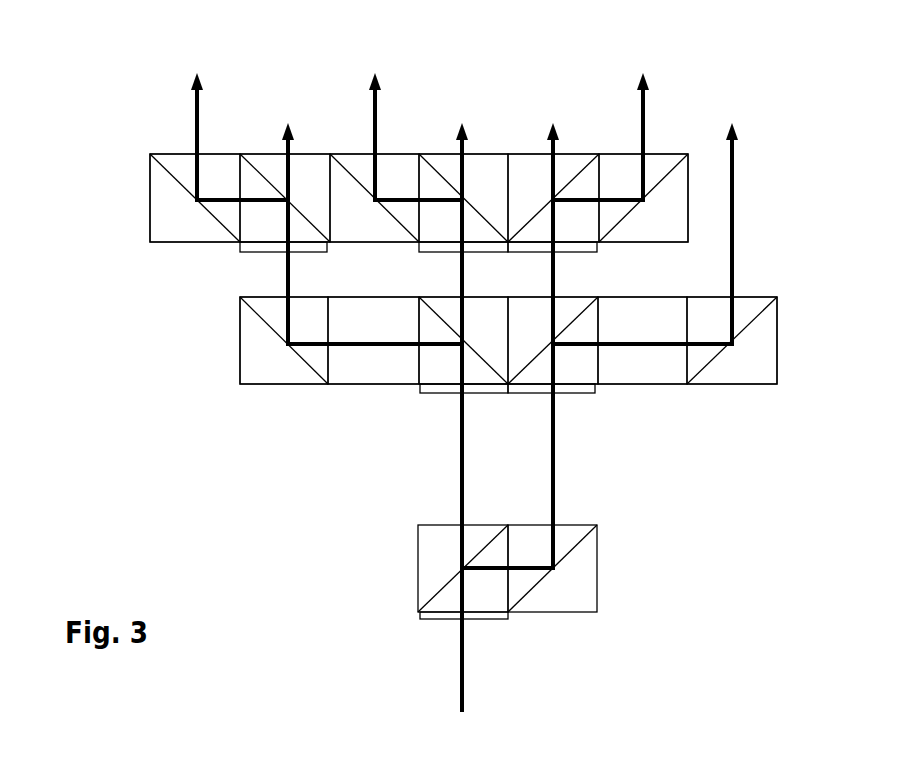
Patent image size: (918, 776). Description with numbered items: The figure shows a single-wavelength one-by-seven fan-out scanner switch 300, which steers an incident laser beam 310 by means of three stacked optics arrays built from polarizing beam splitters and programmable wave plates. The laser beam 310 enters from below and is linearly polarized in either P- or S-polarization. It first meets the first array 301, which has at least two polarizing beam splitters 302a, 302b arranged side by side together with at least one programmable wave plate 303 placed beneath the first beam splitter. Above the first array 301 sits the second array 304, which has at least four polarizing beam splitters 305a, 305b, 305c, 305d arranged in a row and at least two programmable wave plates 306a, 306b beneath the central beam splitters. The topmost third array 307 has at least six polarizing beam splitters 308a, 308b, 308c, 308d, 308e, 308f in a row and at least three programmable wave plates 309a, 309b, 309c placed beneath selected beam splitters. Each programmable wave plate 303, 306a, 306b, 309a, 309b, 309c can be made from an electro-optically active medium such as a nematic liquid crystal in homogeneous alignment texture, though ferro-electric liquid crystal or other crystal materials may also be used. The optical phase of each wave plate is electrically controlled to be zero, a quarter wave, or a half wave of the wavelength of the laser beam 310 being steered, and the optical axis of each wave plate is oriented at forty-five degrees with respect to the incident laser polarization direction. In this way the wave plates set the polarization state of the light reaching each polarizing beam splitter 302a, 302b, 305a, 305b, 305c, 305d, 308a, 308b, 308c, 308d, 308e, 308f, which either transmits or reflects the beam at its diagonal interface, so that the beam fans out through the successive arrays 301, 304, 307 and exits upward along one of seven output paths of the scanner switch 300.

The single 1×7 fan-out scanner switch 300 is at (435, 387).
The first array 301 is at (406, 523).
The polarizing beam splitter 302a is at (432, 523).
The polarizing beam splitter 302b is at (573, 587).
The programmable wave plate 303 is at (440, 618).
The second array 304 is at (226, 299).
The polarizing beam splitter 305a is at (268, 368).
The polarizing beam splitter 305b is at (428, 365).
The polarizing beam splitter 305c is at (590, 367).
The polarizing beam splitter 305d is at (760, 370).
The programmable wave plate 306a is at (432, 393).
The programmable wave plate 306b is at (570, 395).
The third array 307 is at (142, 155).
The polarizing beam splitter 308a is at (190, 217).
The polarizing beam splitter 308b is at (272, 173).
The polarizing beam splitter 308c is at (367, 227).
The polarizing beam splitter 308d is at (450, 167).
The polarizing beam splitter 308e is at (575, 175).
The polarizing beam splitter 308f is at (667, 180).
The programmable wave plate 309a is at (253, 248).
The programmable wave plate 309b is at (480, 247).
The programmable wave plate 309c is at (580, 245).
The laser beam 310 is at (457, 686).